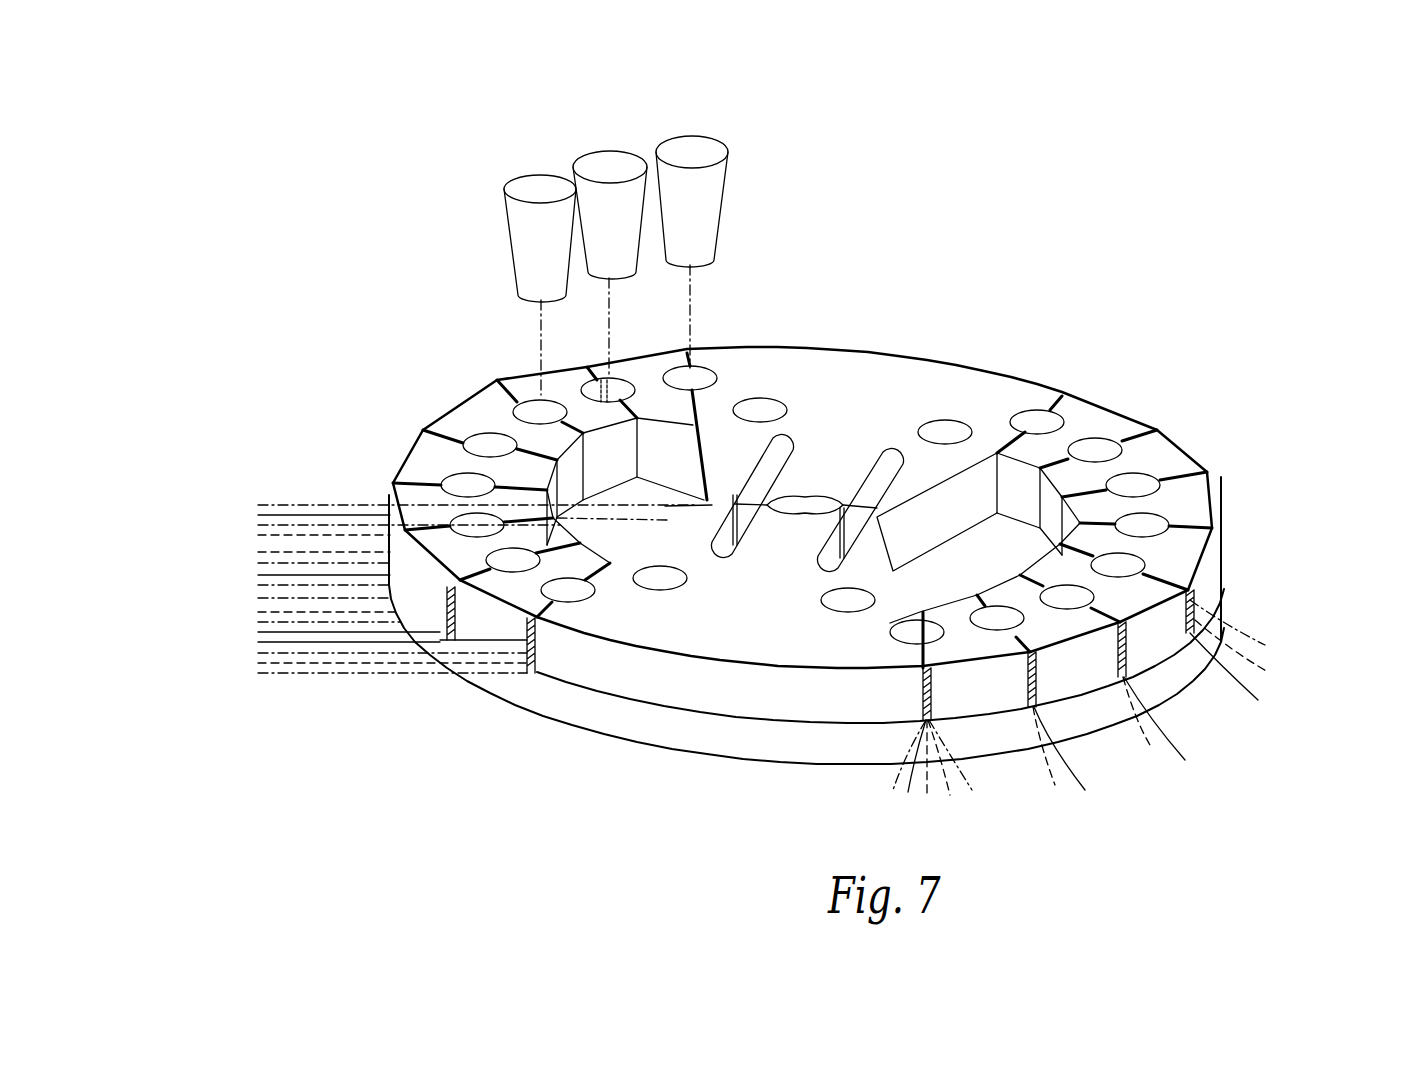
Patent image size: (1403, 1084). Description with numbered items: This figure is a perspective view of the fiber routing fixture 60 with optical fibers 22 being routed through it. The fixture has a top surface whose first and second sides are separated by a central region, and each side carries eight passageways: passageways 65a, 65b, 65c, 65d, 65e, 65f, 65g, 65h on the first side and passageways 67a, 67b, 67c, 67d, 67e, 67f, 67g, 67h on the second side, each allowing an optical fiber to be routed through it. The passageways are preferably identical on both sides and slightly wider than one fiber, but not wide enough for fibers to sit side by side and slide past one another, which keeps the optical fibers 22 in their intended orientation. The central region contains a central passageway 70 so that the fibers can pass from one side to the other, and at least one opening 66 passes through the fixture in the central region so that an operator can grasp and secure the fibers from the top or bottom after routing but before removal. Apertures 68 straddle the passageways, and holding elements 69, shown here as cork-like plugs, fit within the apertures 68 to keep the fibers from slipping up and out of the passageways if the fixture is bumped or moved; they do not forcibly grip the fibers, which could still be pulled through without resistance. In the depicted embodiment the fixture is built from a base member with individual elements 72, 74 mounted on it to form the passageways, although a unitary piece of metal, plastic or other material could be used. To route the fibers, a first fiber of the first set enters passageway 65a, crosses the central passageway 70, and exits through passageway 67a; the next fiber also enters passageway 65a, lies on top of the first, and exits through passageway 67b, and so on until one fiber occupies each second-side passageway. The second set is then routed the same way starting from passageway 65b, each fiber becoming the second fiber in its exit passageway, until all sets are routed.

The fiber routing fixture 60 is at (1020, 217).
The optical fibers 22 is at (252, 503).
The passageway 65a is at (535, 645).
The passageway 65b is at (426, 680).
The passageway 65c is at (393, 487).
The passageway 65d is at (392, 482).
The passageway 65e is at (423, 430).
The passageway 65f is at (497, 380).
The passageway 65g is at (587, 367).
The passageway 65h is at (687, 353).
The opening 66 is at (893, 460).
The passageway 67a is at (920, 685).
The passageway 67b is at (1037, 708).
The passageway 67c is at (1188, 634).
The passageway 67d is at (1188, 590).
The passageway 67e is at (1212, 528).
The passageway 67f is at (1207, 472).
The passageway 67g is at (1157, 430).
The passageway 67h is at (1065, 396).
The apertures 68 is at (707, 380).
The holding elements 69 is at (702, 140).
The central passageway 70 is at (904, 526).
The individual element 72 is at (505, 590).
The individual element 74 is at (690, 650).